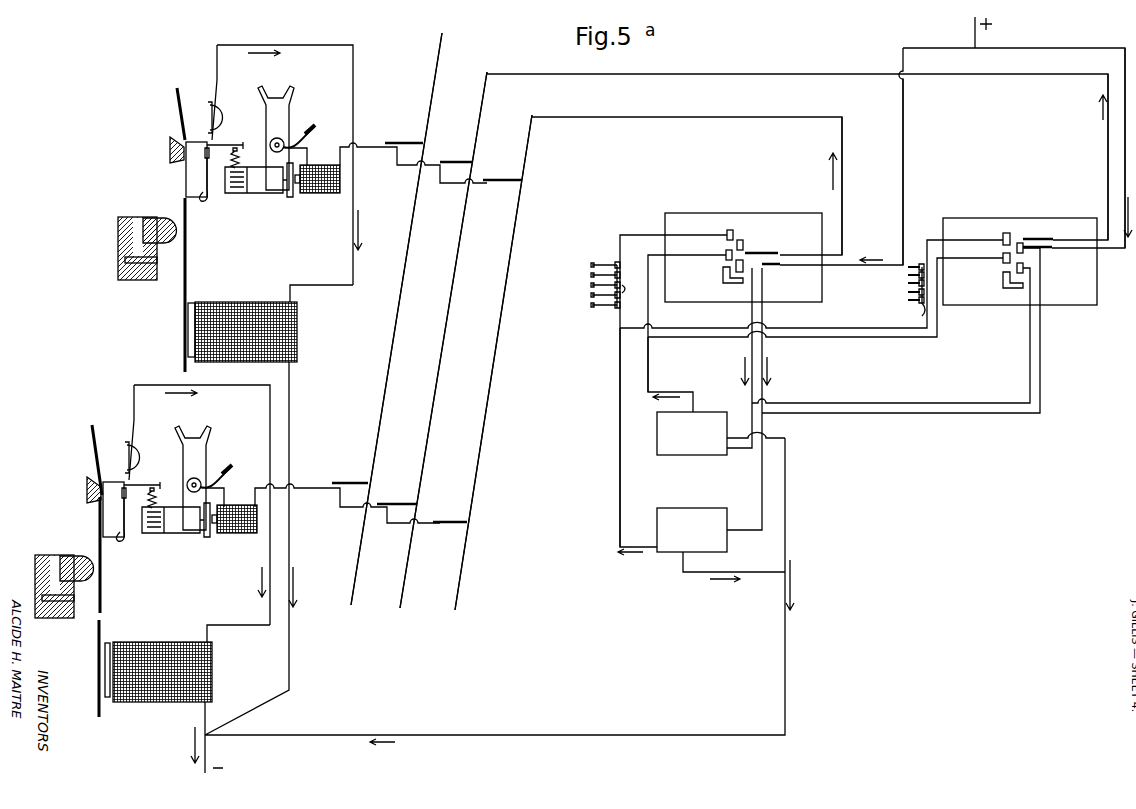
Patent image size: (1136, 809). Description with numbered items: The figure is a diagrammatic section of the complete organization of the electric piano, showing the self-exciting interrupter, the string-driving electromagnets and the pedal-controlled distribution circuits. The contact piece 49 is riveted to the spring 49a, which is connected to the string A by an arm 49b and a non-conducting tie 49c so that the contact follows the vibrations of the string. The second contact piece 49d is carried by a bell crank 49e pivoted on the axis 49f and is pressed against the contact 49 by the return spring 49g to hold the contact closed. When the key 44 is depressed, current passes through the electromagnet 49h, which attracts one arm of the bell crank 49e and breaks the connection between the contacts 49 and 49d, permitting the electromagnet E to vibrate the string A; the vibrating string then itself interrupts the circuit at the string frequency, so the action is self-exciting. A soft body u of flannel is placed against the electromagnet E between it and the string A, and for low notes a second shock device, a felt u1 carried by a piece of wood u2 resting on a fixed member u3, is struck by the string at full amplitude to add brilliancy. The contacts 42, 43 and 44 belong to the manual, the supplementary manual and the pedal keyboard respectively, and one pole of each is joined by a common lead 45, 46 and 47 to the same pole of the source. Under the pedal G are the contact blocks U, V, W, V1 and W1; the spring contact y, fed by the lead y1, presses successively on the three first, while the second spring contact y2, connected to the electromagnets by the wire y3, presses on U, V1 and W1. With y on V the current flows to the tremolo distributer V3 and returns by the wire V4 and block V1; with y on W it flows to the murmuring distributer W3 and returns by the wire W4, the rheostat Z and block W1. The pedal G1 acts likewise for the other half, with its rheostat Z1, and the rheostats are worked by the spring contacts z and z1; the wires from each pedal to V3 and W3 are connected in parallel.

The contact piece 49 is at (236, 145).
The spring 49a is at (170, 142).
The arm 49b is at (207, 196).
The non-conducting tie 49c is at (192, 198).
The second contact piece 49d is at (147, 497).
The bell crank 49e is at (248, 182).
The axis 49f is at (283, 138).
The return spring 49g is at (276, 299).
The electromagnet 49h is at (300, 543).
The string A is at (184, 180).
The soft body u is at (192, 303).
The soft body u1 is at (70, 562).
The hard body u2 is at (45, 560).
The fixed member u3 is at (16, 580).
The electromagnet E is at (205, 491).
The contact 42 is at (376, 302).
The contact 43 is at (425, 324).
The contact 44 is at (477, 342).
The common lead 45 is at (436, 70).
The common lead 46 is at (443, 340).
The common lead 47 is at (510, 353).
The pedal G is at (812, 292).
The pedal G1 is at (1073, 300).
The contact block W1 is at (730, 230).
The contact block W is at (743, 243).
The contact block V1 is at (727, 252).
The contact block V is at (736, 263).
The contact block U is at (723, 283).
The spring contact piece y is at (770, 267).
The lead y1 is at (903, 157).
The second spring contact piece y2 is at (770, 258).
The lead y3 is at (842, 186).
The rheostat Z is at (596, 285).
The spring contact z is at (628, 288).
The rheostat Z1 is at (904, 283).
The spring contact z1 is at (930, 300).
The tremolo distributer V3 is at (692, 433).
The murmuring distributer W3 is at (692, 530).
The wire V4 is at (648, 367).
The wire W4 is at (620, 477).